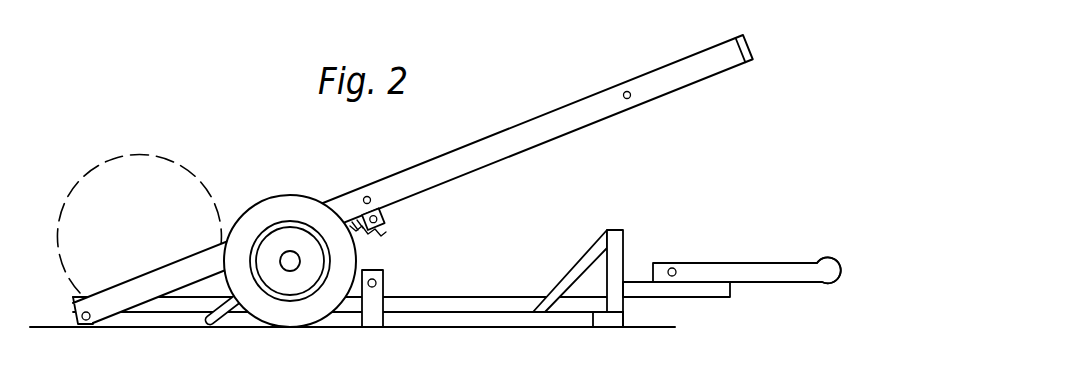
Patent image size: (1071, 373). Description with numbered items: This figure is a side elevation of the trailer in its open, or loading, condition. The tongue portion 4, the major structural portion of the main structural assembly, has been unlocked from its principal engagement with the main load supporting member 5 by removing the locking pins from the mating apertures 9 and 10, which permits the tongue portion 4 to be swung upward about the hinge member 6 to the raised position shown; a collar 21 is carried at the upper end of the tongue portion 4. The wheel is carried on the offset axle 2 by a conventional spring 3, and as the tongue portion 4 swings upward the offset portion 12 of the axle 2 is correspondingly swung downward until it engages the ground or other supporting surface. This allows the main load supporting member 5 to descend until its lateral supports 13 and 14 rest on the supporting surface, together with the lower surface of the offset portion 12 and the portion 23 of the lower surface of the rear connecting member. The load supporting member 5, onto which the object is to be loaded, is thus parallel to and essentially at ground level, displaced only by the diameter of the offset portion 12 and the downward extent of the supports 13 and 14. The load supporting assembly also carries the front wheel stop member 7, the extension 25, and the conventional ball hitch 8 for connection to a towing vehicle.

The offset axle 2 is at (233, 322).
The spring 3 is at (368, 228).
The tongue portion 4 is at (510, 134).
The main load supporting member 5 is at (471, 303).
The hinge member 6 is at (95, 326).
The front wheel stop member 7 is at (628, 235).
The hitch 8 is at (822, 258).
The aperture 9 is at (385, 282).
The aperture 10 is at (370, 197).
The offset portion of axle 12 is at (198, 322).
The lateral support 13 is at (392, 325).
The lateral support 14 is at (625, 318).
The collar 21 is at (726, 40).
The portion of lower surface of rear connecting member 23 is at (48, 328).
The extension 25 is at (748, 277).